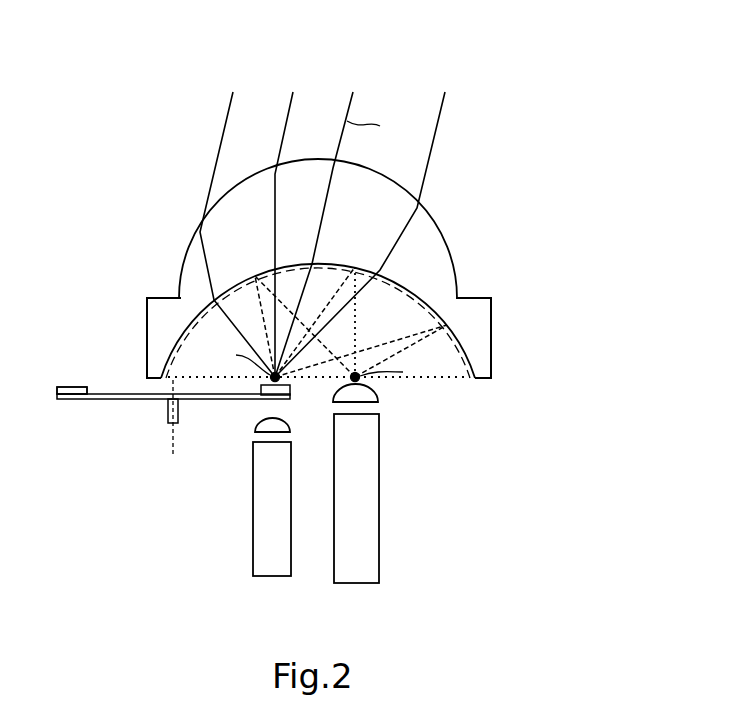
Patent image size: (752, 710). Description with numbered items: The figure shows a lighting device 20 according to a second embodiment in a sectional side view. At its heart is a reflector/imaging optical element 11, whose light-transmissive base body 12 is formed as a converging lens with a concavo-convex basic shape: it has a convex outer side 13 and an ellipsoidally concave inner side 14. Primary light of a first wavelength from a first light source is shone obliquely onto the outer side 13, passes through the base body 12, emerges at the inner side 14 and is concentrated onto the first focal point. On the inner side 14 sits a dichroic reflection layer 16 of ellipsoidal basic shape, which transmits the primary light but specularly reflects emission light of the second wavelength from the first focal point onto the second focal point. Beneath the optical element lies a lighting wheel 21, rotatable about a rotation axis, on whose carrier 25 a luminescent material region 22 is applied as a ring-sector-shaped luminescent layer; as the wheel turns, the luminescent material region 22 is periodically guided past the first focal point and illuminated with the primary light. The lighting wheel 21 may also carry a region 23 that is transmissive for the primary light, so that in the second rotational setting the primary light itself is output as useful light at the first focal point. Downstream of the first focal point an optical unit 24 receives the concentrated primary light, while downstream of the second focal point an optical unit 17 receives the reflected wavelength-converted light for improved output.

The reflector/imaging optical element 11 is at (182, 268).
The base body 12 is at (160, 318).
The outer side 13 is at (428, 219).
The inner side 14 is at (420, 303).
The dichroic reflection layer 16 is at (470, 380).
The optical unit 17 is at (397, 382).
The lighting device 20 is at (541, 201).
The lighting wheel 21 is at (99, 417).
The luminescent material region 22 is at (72, 386).
The transmissive region 23 is at (72, 390).
The optical unit 24 is at (247, 418).
The carrier 25 is at (138, 400).